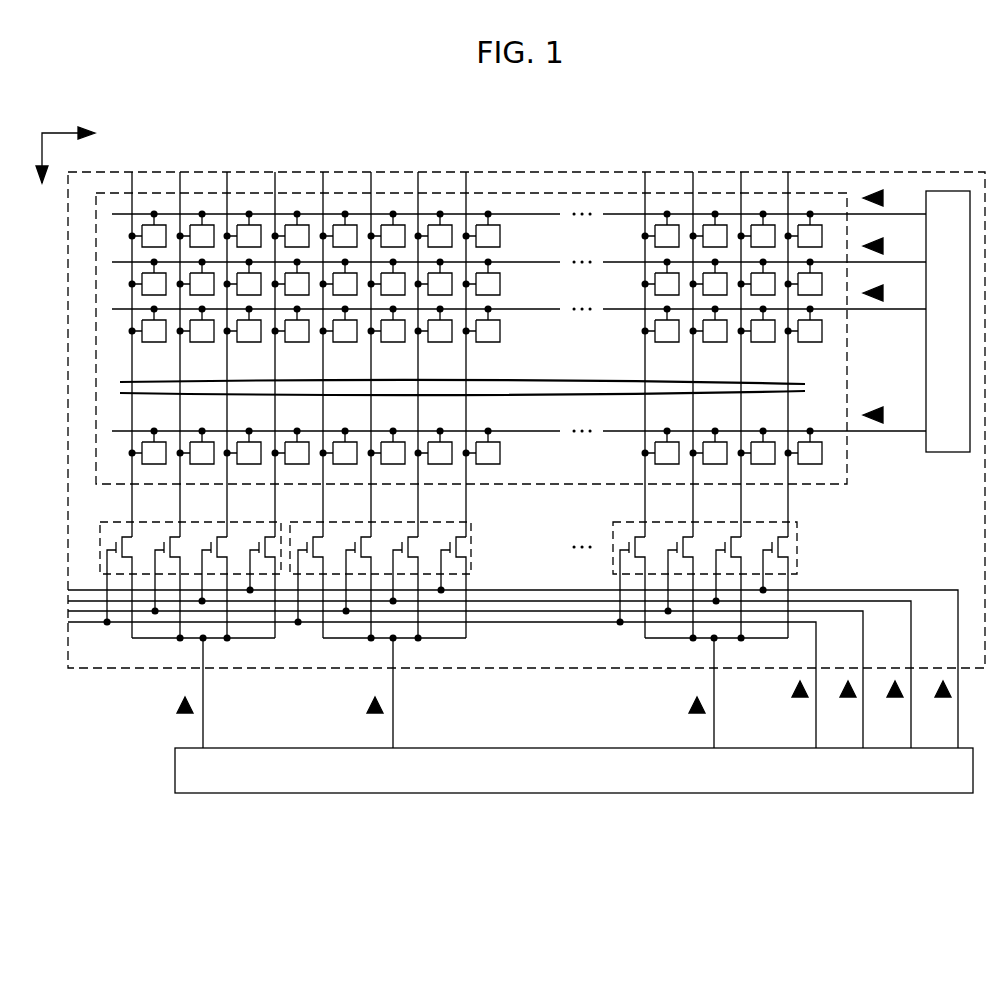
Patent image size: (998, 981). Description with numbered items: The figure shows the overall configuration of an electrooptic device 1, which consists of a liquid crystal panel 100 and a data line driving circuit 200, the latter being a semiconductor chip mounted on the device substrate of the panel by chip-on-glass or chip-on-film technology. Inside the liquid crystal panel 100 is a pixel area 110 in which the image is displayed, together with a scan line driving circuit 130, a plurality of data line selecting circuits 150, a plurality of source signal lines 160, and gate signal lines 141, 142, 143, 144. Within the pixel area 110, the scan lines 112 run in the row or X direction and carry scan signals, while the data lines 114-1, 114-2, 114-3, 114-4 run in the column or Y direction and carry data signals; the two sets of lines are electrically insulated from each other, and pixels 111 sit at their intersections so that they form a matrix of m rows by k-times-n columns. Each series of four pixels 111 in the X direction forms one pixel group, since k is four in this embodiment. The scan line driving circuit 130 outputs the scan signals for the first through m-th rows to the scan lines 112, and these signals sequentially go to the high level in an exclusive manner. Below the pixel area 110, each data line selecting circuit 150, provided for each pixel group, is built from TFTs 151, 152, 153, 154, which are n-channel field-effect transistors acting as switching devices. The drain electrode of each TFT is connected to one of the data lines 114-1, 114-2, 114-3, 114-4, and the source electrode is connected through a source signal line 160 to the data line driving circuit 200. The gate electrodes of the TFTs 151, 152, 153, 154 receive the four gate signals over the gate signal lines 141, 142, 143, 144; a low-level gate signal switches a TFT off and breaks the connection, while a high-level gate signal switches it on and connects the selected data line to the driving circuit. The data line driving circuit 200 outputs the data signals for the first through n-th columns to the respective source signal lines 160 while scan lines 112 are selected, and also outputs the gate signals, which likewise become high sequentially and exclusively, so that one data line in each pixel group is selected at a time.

The electrooptic device 1 is at (877, 161).
The liquid crystal panel 100 is at (535, 172).
The pixel area 110 is at (848, 394).
The pixel 111 is at (655, 238).
The scan line 112 is at (529, 216).
The data line 114-1 is at (132, 188).
The data line 114-2 is at (180, 190).
The data line 114-3 is at (227, 188).
The data line 114-4 is at (275, 190).
The scan line driving circuit 130 is at (950, 454).
The gate signal line 141 is at (958, 640).
The gate signal line 142 is at (911, 647).
The gate signal line 143 is at (863, 654).
The gate signal line 144 is at (816, 653).
The data line selecting circuit 150 is at (100, 527).
The TFT 151 is at (632, 538).
The TFT 152 is at (680, 538).
The TFT 153 is at (728, 538).
The TFT 154 is at (775, 538).
The source signal line 160 is at (202, 696).
The data line driving circuit 200 is at (560, 748).